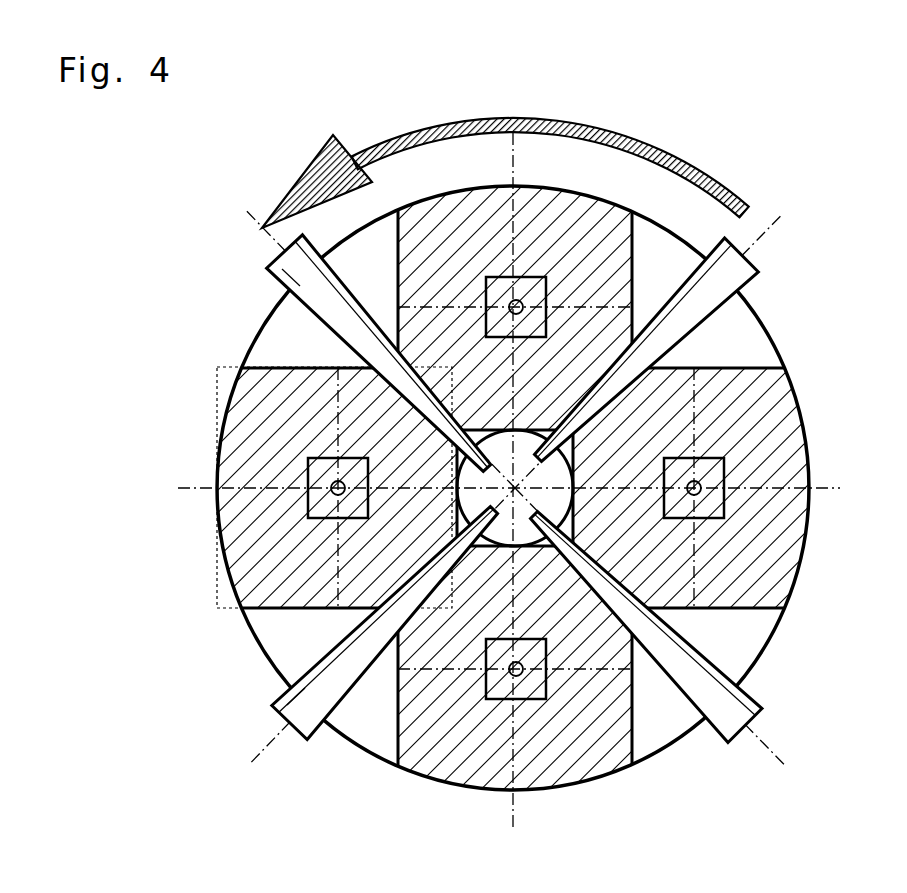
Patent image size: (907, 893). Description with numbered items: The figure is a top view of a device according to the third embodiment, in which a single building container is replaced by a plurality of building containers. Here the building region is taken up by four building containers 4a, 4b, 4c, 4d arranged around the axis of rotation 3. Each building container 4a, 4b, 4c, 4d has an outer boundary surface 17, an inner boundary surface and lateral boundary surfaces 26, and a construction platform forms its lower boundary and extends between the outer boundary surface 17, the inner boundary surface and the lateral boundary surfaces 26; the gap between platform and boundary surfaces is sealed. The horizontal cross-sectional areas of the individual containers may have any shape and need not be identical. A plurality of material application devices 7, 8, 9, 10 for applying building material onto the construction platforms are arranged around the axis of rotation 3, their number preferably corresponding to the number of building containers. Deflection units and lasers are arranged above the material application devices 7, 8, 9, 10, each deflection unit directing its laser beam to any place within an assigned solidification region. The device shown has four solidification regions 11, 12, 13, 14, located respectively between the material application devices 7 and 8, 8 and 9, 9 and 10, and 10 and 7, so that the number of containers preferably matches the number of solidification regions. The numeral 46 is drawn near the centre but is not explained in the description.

The axis of rotation 3 is at (522, 496).
The building container 4a is at (548, 792).
The building container 4b is at (784, 354).
The building container 4c is at (591, 198).
The building container 4d is at (253, 338).
The material application device 7 is at (293, 737).
The material application device 8 is at (740, 737).
The material application device 9 is at (762, 258).
The material application device 10 is at (268, 265).
The solidification region 11 is at (515, 687).
The solidification region 12 is at (708, 488).
The solidification region 13 is at (515, 289).
The solidification region 14 is at (320, 488).
The outer boundary surface 17 is at (218, 437).
The lateral boundary surfaces 26 is at (320, 321).
The bore wall 46 is at (457, 483).